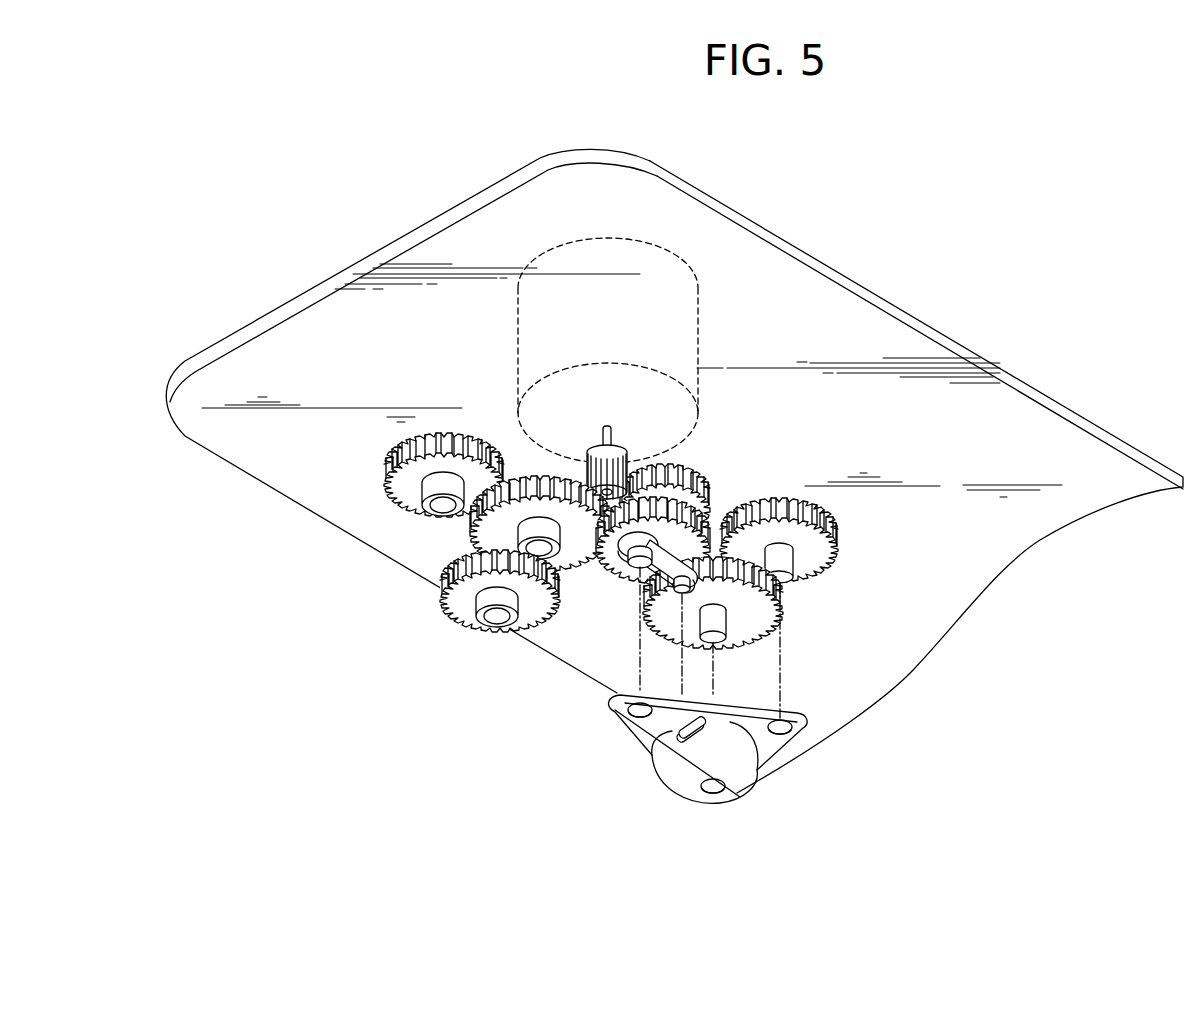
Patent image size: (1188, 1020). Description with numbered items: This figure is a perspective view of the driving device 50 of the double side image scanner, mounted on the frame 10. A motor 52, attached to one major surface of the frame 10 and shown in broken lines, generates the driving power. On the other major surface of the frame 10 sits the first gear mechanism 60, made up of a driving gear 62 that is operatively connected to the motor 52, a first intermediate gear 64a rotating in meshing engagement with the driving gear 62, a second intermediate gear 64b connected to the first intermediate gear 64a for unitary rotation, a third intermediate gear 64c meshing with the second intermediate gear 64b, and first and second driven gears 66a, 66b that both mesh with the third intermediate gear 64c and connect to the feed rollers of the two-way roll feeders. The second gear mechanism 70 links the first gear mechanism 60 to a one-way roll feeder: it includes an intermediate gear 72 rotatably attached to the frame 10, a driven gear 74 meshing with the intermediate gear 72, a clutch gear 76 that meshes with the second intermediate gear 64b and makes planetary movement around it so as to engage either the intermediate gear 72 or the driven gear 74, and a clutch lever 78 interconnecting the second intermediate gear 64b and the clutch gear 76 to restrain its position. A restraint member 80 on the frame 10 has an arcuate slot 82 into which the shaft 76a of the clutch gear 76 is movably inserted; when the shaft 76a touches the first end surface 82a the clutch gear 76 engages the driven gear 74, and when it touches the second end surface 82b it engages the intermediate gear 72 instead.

The frame 10 is at (845, 332).
The driving device 50 is at (847, 540).
The motor 52 is at (667, 248).
The first gear mechanism 60 is at (383, 480).
The driving gear 62 is at (710, 508).
The first intermediate gear 64a is at (623, 443).
The second intermediate gear 64b is at (618, 553).
The third intermediate gear 64c is at (495, 530).
The first driven gear 66a is at (403, 495).
The second driven gear 66b is at (453, 607).
The second gear mechanism 70 is at (847, 522).
The intermediate gear 72 is at (813, 558).
The driven gear 74 is at (740, 625).
The clutch gear 76 is at (707, 570).
The shaft 76a is at (684, 594).
The clutch lever 78 is at (640, 590).
The restraint member 80 is at (685, 768).
The arcuate slot 82 is at (737, 793).
The first end surface 82a is at (686, 719).
The second end surface 82b is at (742, 720).